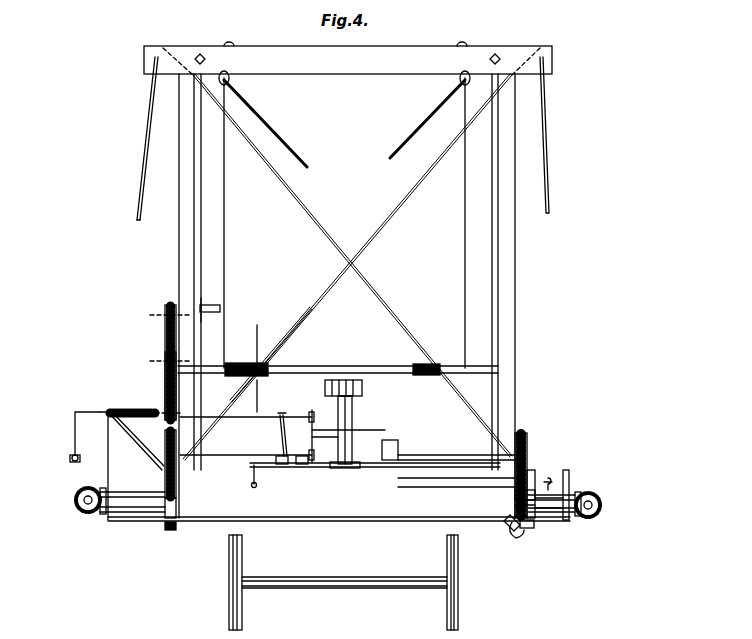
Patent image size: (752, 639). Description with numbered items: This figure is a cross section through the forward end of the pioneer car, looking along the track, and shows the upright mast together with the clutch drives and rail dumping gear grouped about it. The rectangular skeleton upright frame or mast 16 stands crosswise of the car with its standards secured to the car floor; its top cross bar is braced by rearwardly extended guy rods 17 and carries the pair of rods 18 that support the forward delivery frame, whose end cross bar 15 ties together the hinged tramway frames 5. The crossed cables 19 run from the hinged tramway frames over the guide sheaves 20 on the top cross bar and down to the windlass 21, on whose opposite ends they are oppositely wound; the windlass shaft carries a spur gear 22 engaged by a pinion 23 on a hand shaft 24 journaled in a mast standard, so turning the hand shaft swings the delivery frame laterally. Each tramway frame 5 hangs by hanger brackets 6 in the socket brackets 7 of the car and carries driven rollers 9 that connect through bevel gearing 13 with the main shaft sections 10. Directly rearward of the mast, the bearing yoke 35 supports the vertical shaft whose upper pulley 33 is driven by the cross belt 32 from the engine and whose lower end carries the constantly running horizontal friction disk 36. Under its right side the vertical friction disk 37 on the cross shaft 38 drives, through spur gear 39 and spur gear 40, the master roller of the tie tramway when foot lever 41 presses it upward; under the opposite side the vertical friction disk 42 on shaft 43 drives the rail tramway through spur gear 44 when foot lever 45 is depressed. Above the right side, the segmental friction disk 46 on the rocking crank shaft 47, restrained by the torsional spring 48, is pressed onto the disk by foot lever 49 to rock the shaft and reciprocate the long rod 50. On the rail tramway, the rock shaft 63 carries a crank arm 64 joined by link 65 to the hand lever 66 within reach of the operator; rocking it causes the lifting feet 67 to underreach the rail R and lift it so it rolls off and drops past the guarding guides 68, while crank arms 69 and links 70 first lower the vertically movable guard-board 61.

The tramway frame 5 is at (155, 470).
The hookline hanger bracket 6 is at (530, 470).
The standard socket bracket 7 is at (515, 480).
The driven roller 9 is at (126, 492).
The main shaft section 10 is at (82, 508).
The bevel gearing 13 is at (100, 514).
The end cross bar 15 is at (298, 522).
The upright frame or mast 16 is at (362, 74).
The guy rod 17 is at (202, 241).
The rod 18 is at (147, 128).
The crossed cable 19 is at (270, 126).
The guide sheave 20 is at (230, 78).
The windlass 21 is at (331, 368).
The spur gear 22 is at (168, 362).
The pinion 23 is at (165, 318).
The hand shaft 24 is at (217, 314).
The cross belt 32 is at (362, 390).
The pulley 33 is at (356, 402).
The bearing yoke 35 is at (352, 428).
The horizontal friction disk 36 is at (385, 432).
The vertical friction disk 37 is at (312, 440).
The shaft 38 is at (216, 455).
The spur gear 39 is at (165, 438).
The spur gear 40 is at (178, 490).
The foot lever 41 is at (280, 464).
The vertical friction disk 42 is at (398, 452).
The shaft 43 is at (440, 457).
The spur gear 44 is at (527, 440).
The foot lever 45 is at (302, 465).
The segmental friction disk 46 is at (310, 415).
The rocking crank shaft 47 is at (72, 430).
The torsional spring 48 is at (113, 410).
The foot lever 49 is at (254, 486).
The long rod 50 is at (72, 464).
The guard-board 61 is at (535, 528).
The rock shaft 63 is at (515, 495).
The crank arm 64 is at (515, 500).
The link 65 is at (397, 481).
The hand lever 66 is at (256, 385).
The lifting foot 67 is at (542, 510).
The guarding guide 68 is at (518, 530).
The crank arm 69 is at (515, 505).
The link 70 is at (508, 523).
The rail R is at (550, 484).